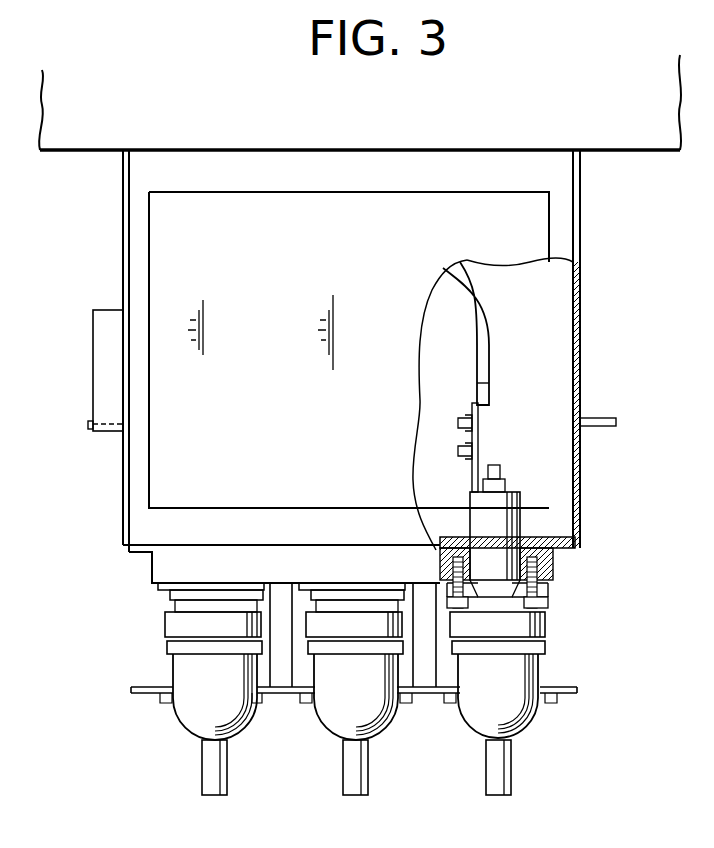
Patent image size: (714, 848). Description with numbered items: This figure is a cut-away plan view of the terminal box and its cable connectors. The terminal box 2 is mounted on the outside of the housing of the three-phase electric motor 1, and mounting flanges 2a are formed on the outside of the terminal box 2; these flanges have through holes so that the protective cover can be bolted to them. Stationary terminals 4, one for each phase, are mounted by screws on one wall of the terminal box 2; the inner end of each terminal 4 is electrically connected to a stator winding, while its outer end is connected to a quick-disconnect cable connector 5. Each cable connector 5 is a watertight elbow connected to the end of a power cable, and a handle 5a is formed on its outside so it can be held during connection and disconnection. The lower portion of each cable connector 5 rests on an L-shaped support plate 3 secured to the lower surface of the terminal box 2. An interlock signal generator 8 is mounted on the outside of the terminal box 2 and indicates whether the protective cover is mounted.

The three-phase electric motor 1 is at (638, 135).
The terminal box 2 is at (582, 298).
The mounting flanges 2a is at (88, 424).
The interlock signal generator 8 is at (93, 342).
The stationary terminals 4 is at (523, 518).
The L-shaped support plate 3 is at (130, 690).
The quick-disconnect cable connectors 5 is at (183, 730).
The handle 5a is at (210, 797).